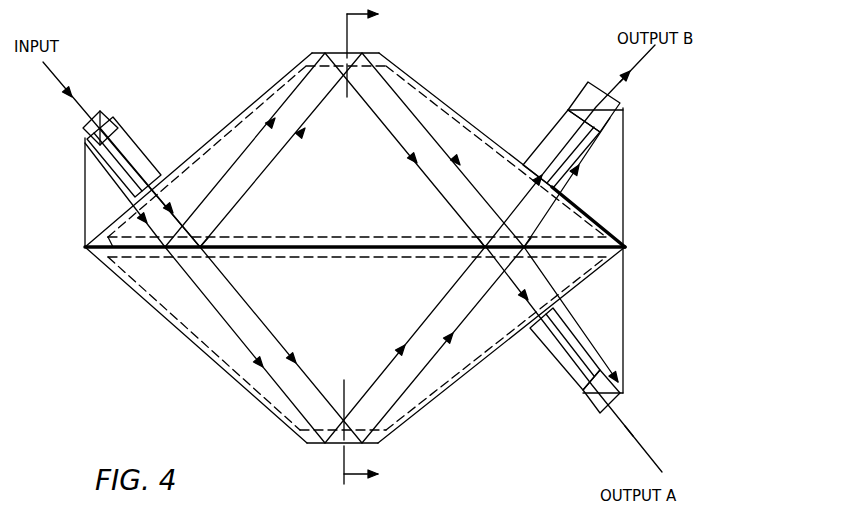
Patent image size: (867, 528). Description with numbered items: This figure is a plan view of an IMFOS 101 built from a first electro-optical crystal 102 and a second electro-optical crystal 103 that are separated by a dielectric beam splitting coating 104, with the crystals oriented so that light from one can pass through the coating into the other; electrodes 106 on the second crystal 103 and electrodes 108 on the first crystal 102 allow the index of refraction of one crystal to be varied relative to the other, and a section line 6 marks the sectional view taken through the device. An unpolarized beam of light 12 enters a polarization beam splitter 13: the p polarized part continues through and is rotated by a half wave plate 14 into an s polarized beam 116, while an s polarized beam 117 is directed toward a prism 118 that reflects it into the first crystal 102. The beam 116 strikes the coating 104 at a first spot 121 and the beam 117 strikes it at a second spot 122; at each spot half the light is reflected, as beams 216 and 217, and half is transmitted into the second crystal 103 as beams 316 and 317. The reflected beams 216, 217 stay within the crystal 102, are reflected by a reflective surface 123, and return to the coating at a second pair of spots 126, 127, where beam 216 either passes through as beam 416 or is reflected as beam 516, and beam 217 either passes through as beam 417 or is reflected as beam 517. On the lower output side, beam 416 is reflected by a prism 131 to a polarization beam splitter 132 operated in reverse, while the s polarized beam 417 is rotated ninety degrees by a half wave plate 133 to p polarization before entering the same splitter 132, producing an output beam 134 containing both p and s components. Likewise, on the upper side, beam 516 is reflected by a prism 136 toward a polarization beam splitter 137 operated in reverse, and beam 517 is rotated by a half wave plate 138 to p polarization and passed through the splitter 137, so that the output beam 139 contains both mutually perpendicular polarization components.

The section line 6- 6 is at (368, 247).
The unpolarized beam of light 12 is at (58, 93).
The polarization beam splitter 13 is at (128, 118).
The ½ wave plate 14 is at (145, 157).
The IMFOS 101 is at (167, 340).
The first electro-optical crystal 102 is at (232, 117).
The second electro-optical crystal 103 is at (217, 363).
The dielectric beam splitting coating 104 is at (85, 248).
The electrode 106 is at (448, 362).
The electrode 108 is at (438, 122).
The s polarized beam 116 is at (158, 189).
The s polarized beam 117 is at (86, 143).
The prism 118 is at (85, 178).
The first spot 121 is at (207, 240).
The second spot 122 is at (117, 258).
The reflective surface 123 is at (358, 57).
The spot 126 is at (525, 243).
The spot 127 is at (483, 243).
The prism 131 is at (623, 325).
The polarization beam splitter 132 is at (587, 430).
The ½ wave plate 133 is at (560, 363).
The output beam 134 is at (632, 424).
The prism 136 is at (627, 192).
The polarization beam splitter 137 is at (580, 101).
The ½ wave plate 138 is at (548, 137).
The output beam 139 is at (623, 73).
The beam 216 is at (256, 188).
The beam 217 is at (232, 170).
The beam 316 is at (278, 340).
The beam 317 is at (196, 290).
The beam 416 is at (600, 258).
The beam 417 is at (515, 288).
The beam 516 is at (547, 212).
The beam 517 is at (530, 192).